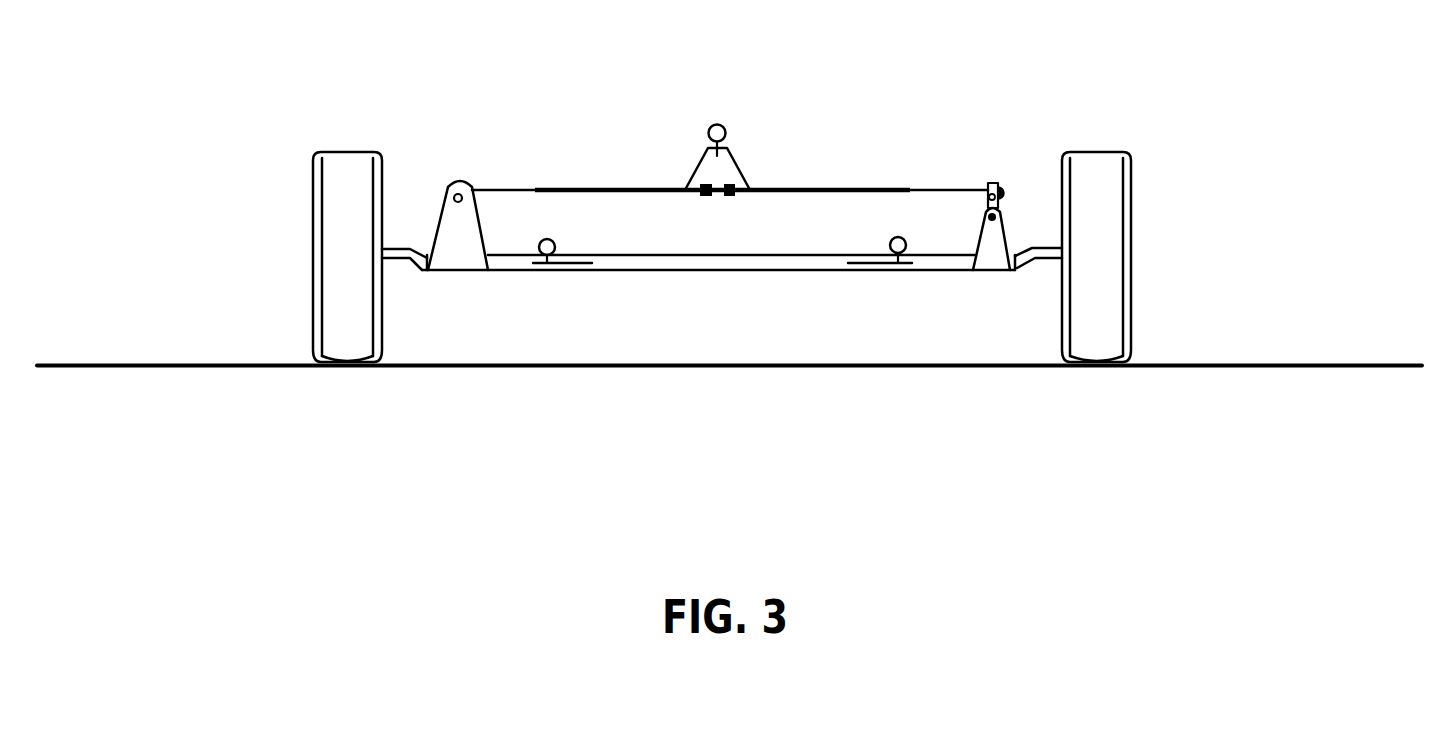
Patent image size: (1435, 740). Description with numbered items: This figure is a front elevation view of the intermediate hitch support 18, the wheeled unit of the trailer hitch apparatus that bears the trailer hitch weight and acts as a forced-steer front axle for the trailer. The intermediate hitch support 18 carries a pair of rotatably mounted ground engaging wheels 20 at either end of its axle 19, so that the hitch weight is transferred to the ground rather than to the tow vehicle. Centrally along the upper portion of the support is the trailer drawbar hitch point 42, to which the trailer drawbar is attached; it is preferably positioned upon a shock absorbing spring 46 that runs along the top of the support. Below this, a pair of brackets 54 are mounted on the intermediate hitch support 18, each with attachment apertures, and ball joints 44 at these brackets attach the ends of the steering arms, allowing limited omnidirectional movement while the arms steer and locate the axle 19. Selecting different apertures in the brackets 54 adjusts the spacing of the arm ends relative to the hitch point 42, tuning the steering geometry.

The intermediate hitch support 18 is at (861, 139).
The axle 19 is at (742, 262).
The ground engaging wheels 20 is at (347, 178).
The trailer drawbar hitch point 42 is at (722, 130).
The ball joints 44 is at (553, 243).
The spring 46 is at (643, 188).
The brackets 54 is at (583, 265).